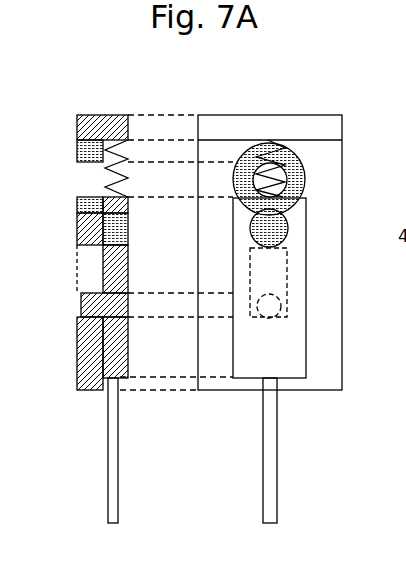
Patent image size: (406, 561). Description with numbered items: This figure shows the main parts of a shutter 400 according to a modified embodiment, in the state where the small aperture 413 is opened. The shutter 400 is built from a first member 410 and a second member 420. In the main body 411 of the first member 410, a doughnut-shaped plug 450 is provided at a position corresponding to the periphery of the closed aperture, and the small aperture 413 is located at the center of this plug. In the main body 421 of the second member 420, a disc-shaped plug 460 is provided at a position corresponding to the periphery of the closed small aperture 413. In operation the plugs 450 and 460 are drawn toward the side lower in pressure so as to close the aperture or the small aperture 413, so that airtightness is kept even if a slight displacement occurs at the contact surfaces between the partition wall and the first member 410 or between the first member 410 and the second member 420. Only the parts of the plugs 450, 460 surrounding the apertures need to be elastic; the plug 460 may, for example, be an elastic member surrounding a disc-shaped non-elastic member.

The shutter 400 is at (213, 100).
The first member 410 is at (95, 108).
The main body of the first member 411 is at (78, 148).
The small aperture 413 is at (80, 181).
The second member 420 is at (125, 393).
The main body of the second member 421 is at (128, 347).
The doughnut-shaped plug 450 is at (77, 206).
The disc-shaped plug 460 is at (128, 233).